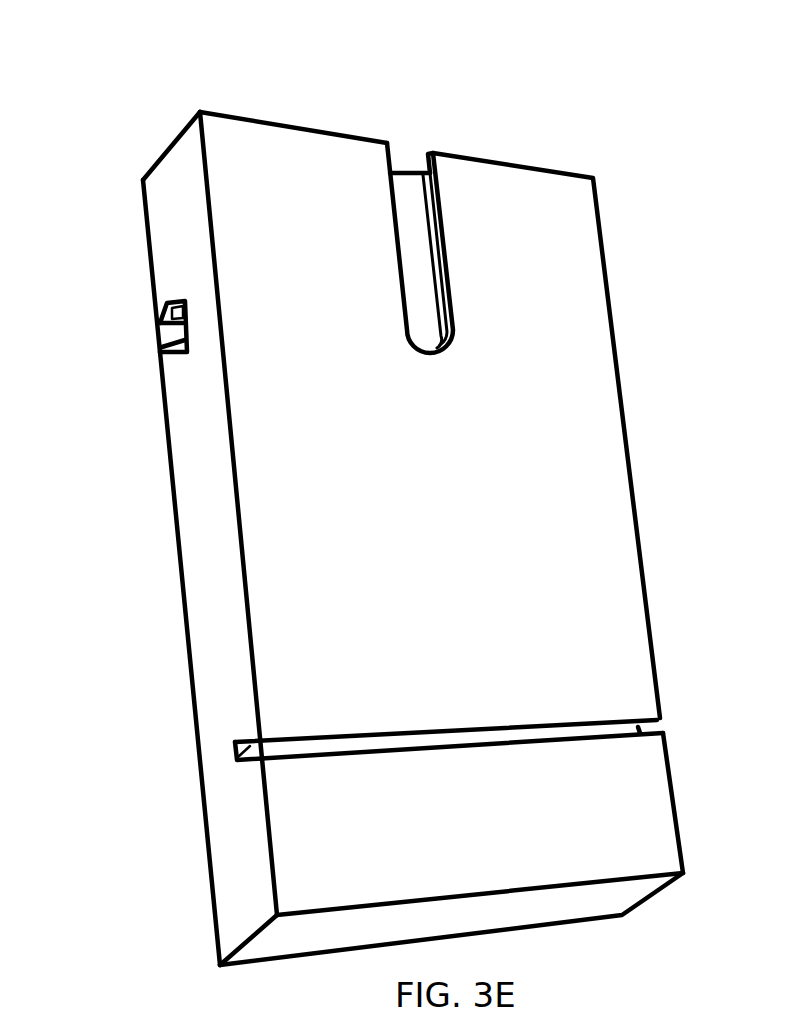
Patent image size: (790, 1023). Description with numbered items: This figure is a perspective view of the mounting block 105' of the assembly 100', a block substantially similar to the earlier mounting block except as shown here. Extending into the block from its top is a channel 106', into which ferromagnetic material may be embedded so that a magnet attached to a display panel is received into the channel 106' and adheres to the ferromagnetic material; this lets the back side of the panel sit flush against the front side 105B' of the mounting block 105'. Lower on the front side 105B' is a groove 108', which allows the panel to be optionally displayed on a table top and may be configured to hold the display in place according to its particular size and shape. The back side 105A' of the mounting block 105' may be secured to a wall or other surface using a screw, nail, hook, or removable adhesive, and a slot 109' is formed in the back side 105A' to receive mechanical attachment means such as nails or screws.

The ventilation assembly 100' is at (364, 510).
The mounting block 105' is at (360, 510).
The mounting block back side 105A' is at (140, 538).
The front side 105B' is at (430, 513).
The channel 106' is at (420, 230).
The groove 108' is at (391, 748).
The slot 109' is at (131, 328).